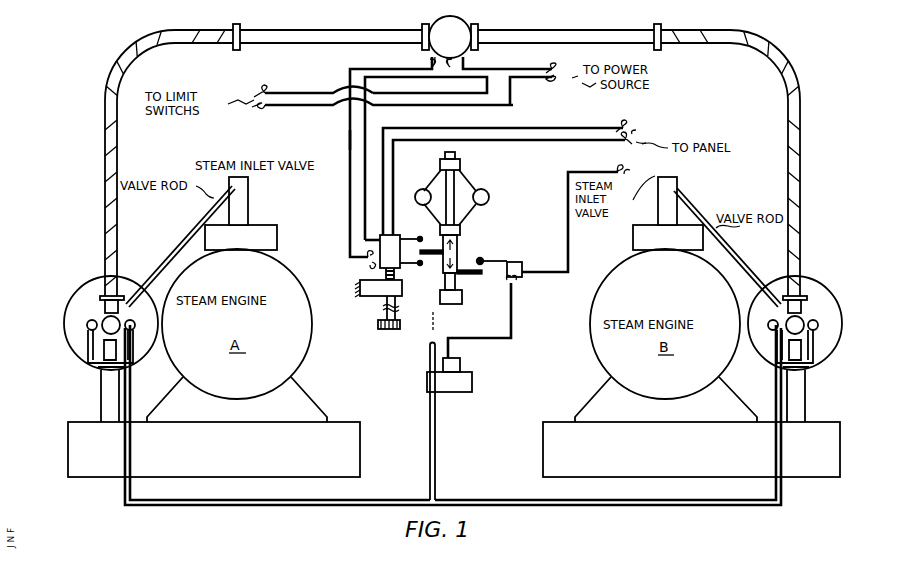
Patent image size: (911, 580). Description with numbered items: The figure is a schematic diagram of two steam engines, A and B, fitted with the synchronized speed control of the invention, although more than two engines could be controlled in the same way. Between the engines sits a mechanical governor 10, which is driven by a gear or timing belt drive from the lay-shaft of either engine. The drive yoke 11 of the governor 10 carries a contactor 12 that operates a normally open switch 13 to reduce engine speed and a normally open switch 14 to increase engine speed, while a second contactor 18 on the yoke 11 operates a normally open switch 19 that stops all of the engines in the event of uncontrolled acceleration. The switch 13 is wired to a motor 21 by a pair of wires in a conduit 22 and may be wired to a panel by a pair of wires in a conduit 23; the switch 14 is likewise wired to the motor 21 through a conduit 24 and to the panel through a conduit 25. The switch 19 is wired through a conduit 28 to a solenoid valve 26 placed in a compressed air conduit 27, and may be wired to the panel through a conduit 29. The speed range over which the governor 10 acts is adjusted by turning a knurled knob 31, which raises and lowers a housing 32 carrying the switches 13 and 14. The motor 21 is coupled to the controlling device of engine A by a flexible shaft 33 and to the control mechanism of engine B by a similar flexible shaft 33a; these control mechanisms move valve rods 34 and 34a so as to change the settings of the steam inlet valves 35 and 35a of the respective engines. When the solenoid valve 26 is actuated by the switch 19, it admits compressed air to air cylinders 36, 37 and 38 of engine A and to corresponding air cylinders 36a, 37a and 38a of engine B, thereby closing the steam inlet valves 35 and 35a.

The mechanical governor 10 is at (466, 170).
The drive yoke 11 is at (458, 252).
The contactor 12 is at (432, 256).
The normally open switch 13 is at (422, 238).
The normally open switch 14 is at (392, 284).
The contactor 18 is at (474, 278).
The normally open switch 19 is at (492, 259).
The motor 21 is at (438, 18).
The conduit 22 is at (390, 70).
The conduit 23 is at (544, 130).
The conduit 24 is at (348, 142).
The conduit 25 is at (544, 134).
The solenoid valve 26 is at (476, 370).
The compressed air conduit 27 is at (436, 458).
The conduit 28 is at (512, 316).
The conduit 29 is at (572, 222).
The knurled knob 31 is at (376, 328).
The housing 32 is at (375, 248).
The flexible shaft 33 is at (164, 35).
The flexible shaft 33a is at (755, 53).
The valve rod 34 is at (199, 214).
The valve rod 34a is at (722, 210).
The steam inlet valve 35 is at (237, 187).
The steam inlet valve 35a is at (668, 175).
The air cylinder 36 is at (88, 356).
The air cylinder 36a is at (824, 350).
The air cylinder 37 is at (86, 325).
The air cylinder 37a is at (818, 320).
The air cylinder 38 is at (136, 325).
The air cylinder 38a is at (767, 322).